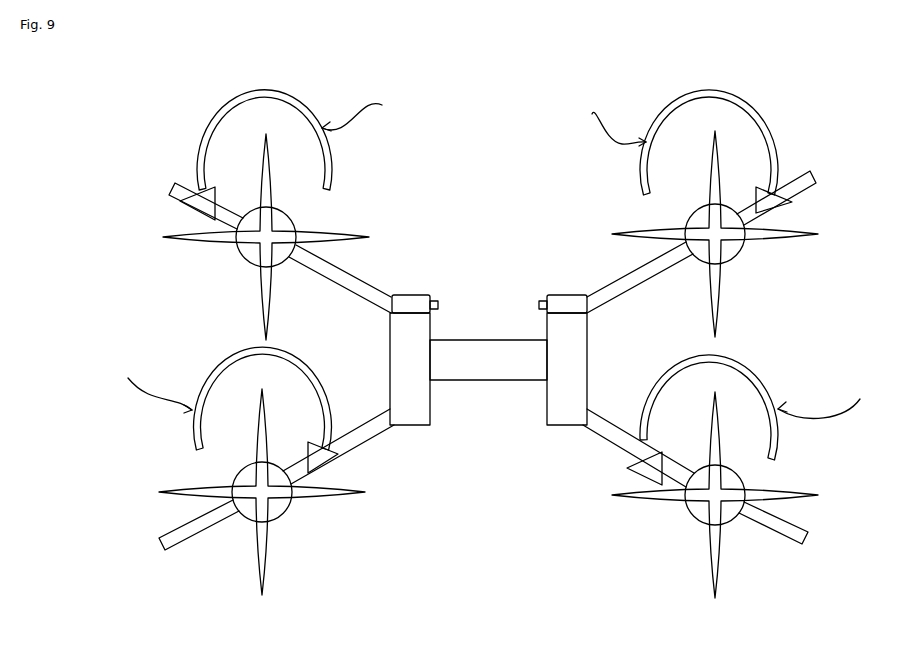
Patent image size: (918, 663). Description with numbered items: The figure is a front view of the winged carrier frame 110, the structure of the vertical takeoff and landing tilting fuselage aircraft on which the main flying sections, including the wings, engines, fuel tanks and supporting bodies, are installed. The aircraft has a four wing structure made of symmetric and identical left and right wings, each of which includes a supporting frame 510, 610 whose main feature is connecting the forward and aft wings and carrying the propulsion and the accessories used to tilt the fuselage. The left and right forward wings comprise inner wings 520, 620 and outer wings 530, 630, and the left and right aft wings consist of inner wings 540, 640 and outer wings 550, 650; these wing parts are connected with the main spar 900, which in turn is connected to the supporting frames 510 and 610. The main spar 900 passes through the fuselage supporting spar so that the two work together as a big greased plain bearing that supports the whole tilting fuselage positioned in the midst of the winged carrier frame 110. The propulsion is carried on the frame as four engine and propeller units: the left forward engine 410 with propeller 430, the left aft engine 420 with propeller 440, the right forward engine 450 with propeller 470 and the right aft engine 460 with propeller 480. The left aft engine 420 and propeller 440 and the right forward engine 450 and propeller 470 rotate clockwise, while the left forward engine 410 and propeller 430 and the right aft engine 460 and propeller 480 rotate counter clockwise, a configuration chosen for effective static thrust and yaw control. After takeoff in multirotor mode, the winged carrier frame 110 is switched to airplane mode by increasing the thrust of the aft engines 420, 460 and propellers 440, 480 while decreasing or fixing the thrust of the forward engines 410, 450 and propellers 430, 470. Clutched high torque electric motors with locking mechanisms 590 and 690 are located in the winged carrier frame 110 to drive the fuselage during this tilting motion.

The winged carrier frame 110 is at (488, 312).
The left forward engine 410 is at (700, 515).
The left aft engine 420 is at (732, 252).
The propeller 430 is at (713, 542).
The propeller 440 is at (722, 282).
The right forward engine 450 is at (278, 508).
The right aft engine 460 is at (250, 254).
The propeller 470 is at (265, 542).
The propeller 480 is at (300, 228).
The supporting frame 510 is at (570, 418).
The inner wing 520 is at (612, 440).
The outer wing 530 is at (782, 532).
The inner wing 540 is at (608, 298).
The outer wing 550 is at (790, 183).
The locking mechanism 590 is at (560, 296).
The supporting frame 610 is at (410, 413).
The inner wing 620 is at (370, 427).
The outer wing 630 is at (172, 542).
The inner wing 640 is at (322, 272).
The outer wing 650 is at (184, 180).
The locking mechanism 690 is at (407, 296).
The main spar 900 is at (492, 380).